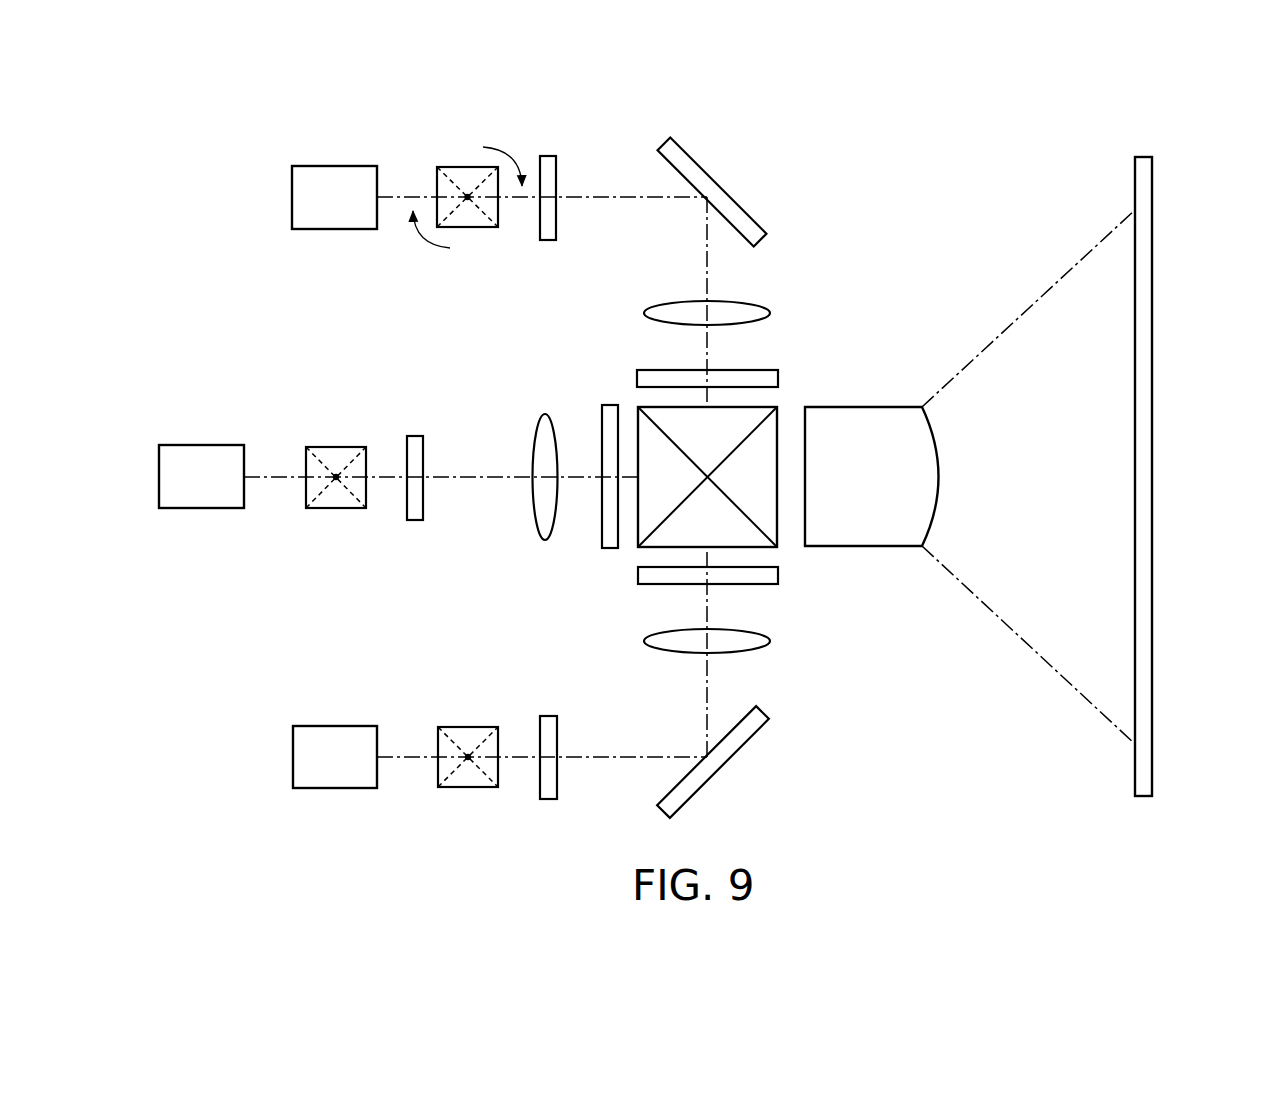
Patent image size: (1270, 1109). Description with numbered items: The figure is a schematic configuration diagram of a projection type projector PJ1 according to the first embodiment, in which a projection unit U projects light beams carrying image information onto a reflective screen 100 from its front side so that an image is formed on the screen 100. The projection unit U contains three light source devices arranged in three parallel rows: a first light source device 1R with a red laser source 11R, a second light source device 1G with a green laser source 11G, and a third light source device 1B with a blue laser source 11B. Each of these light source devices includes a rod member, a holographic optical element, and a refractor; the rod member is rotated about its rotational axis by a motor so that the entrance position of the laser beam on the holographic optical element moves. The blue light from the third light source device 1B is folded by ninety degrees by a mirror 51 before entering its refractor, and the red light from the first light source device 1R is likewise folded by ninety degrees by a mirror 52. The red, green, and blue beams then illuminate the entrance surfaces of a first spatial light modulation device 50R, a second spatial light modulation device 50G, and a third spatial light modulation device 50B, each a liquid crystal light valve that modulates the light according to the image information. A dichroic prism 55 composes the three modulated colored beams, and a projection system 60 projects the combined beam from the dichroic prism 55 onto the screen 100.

The projection type projector PJ1 is at (876, 122).
The projection unit U is at (866, 368).
The third light source device 1B is at (468, 171).
The second light source device 1G is at (293, 500).
The first light source device 1R is at (425, 779).
The blue laser source 11B is at (308, 218).
The green laser source 11G is at (176, 500).
The red laser source 11R is at (309, 779).
The third spatial light modulation device 50B is at (638, 372).
The second spatial light modulation device 50G is at (612, 540).
The first spatial light modulation device 50R is at (772, 577).
The mirror 51 is at (743, 217).
The mirror 52 is at (745, 738).
The dichroic prism 55 is at (780, 410).
The projection system 60 is at (905, 538).
The screen 100 is at (1147, 768).